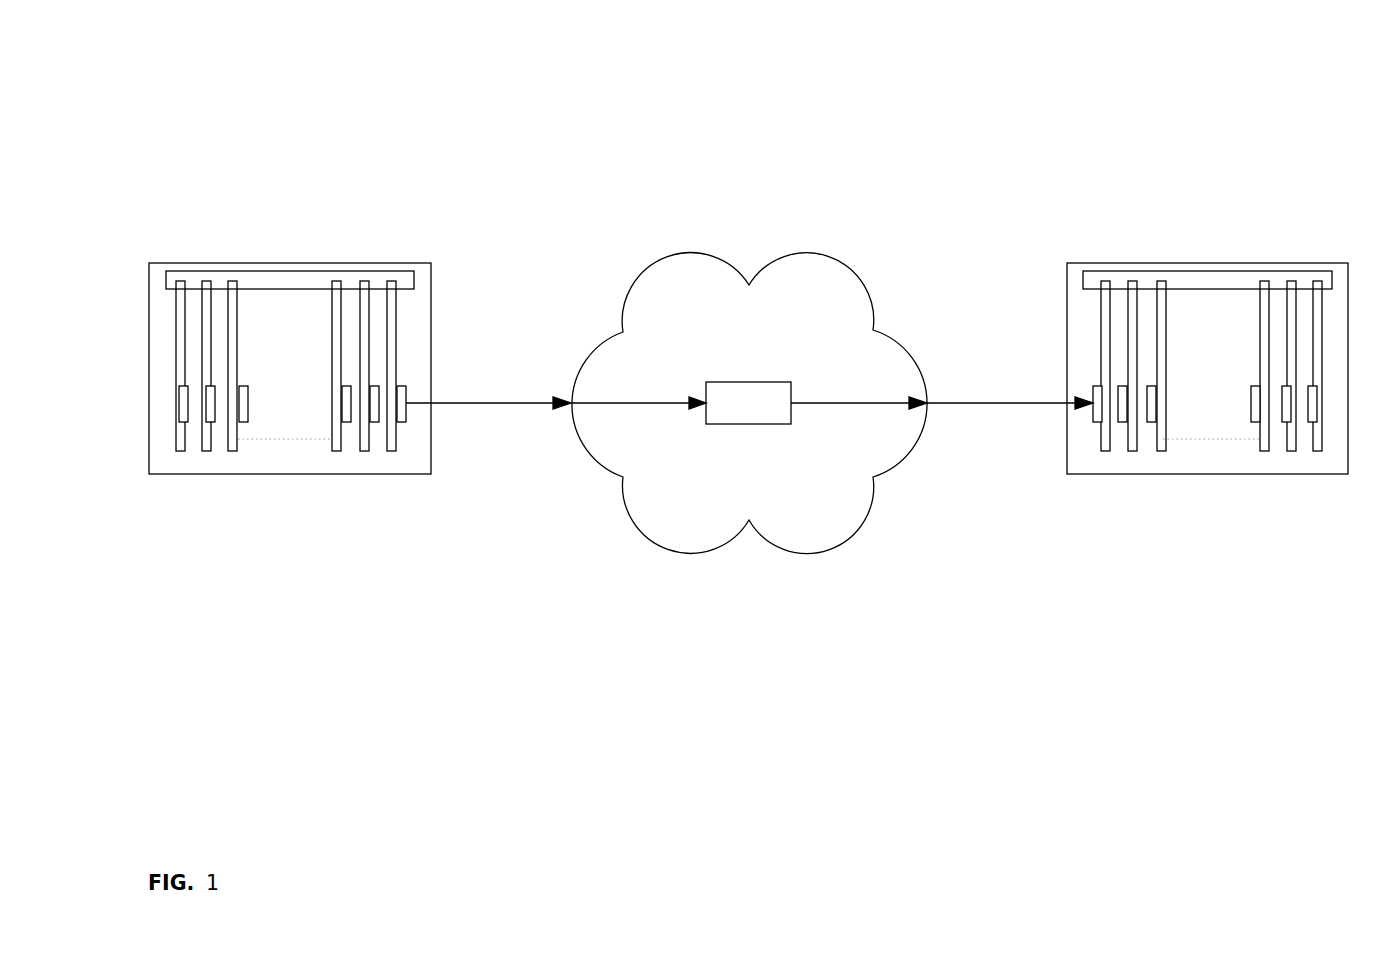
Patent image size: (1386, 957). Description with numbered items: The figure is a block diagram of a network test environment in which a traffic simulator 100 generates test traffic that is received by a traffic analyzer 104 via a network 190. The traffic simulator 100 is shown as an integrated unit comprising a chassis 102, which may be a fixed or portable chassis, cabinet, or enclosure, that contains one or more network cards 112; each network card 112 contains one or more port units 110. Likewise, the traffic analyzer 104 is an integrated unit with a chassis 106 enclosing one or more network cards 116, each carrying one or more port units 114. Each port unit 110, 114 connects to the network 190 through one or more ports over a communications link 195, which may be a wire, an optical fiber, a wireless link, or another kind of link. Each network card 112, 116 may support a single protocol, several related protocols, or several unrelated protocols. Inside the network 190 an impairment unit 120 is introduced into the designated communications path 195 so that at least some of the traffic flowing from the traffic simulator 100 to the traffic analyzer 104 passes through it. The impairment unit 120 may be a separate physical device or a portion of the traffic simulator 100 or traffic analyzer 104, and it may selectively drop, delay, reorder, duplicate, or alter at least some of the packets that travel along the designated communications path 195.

The traffic simulator 100 is at (274, 126).
The chassis 102 is at (353, 262).
The traffic analyzer 104 is at (1201, 124).
The chassis 106 is at (1148, 262).
The port unit 110 is at (400, 422).
The network card 112 is at (392, 452).
The port unit 114 is at (1097, 422).
The network card 116 is at (1105, 452).
The impairment unit 120 is at (762, 382).
The network 190 is at (749, 353).
The communications link 195 is at (528, 403).